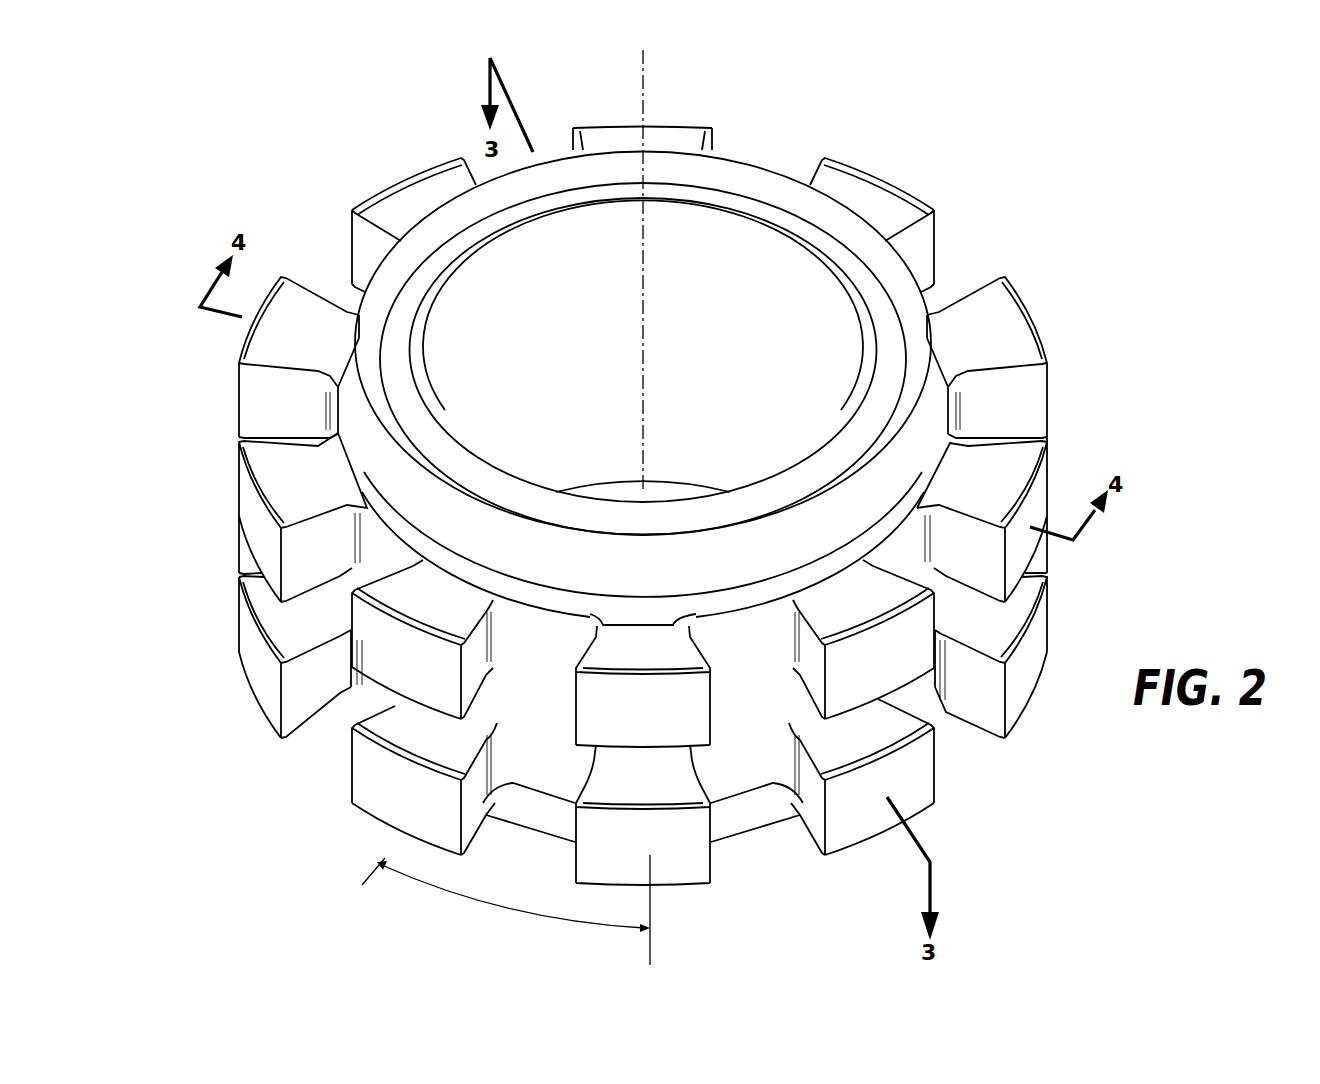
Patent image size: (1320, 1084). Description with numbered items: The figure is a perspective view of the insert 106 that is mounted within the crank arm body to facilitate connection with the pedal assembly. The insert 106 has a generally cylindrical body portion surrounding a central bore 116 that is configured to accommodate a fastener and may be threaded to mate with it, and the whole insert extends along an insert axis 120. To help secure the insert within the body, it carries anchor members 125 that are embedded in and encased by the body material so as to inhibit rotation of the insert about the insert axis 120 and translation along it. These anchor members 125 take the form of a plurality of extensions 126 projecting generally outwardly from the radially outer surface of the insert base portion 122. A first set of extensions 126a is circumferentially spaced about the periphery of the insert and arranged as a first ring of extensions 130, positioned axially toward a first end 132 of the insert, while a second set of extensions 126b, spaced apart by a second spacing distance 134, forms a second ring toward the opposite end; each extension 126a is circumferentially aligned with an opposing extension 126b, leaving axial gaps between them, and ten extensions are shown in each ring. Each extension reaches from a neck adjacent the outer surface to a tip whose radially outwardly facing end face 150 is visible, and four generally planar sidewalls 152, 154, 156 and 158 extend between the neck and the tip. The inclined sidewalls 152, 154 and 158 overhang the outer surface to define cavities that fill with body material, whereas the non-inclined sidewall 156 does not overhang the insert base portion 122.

The insert 106 is at (1108, 237).
The central bore 116 is at (710, 240).
The insert axis 120 is at (648, 74).
The insert base portion 122 is at (890, 280).
The anchor members 125 is at (222, 672).
The extensions 126 is at (373, 768).
The first set of extensions 126a is at (280, 277).
The second set of extensions 126b is at (688, 868).
The first ring of extensions 130 is at (1087, 380).
The first end 132 is at (547, 125).
The second spacing distance 134 is at (455, 908).
The end face 150 is at (910, 675).
The sidewall 152 is at (675, 650).
The sidewall 154 is at (722, 697).
The sidewall 156 is at (651, 762).
The sidewall 158 is at (560, 696).